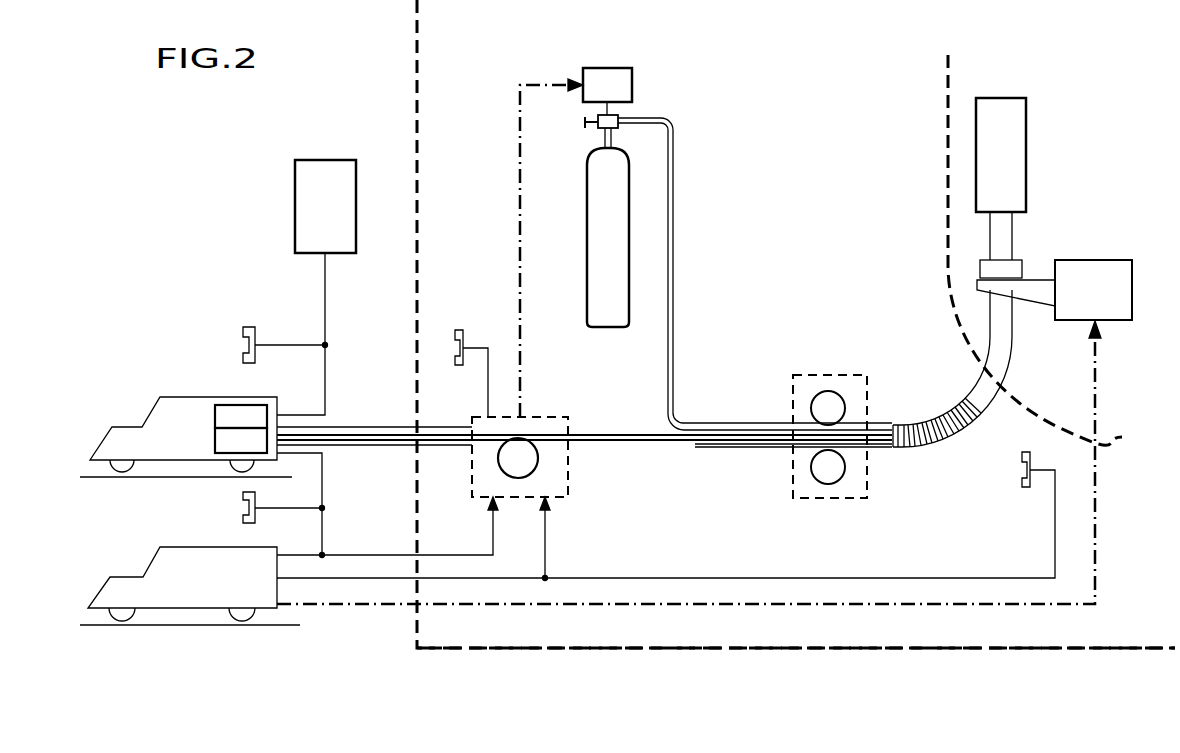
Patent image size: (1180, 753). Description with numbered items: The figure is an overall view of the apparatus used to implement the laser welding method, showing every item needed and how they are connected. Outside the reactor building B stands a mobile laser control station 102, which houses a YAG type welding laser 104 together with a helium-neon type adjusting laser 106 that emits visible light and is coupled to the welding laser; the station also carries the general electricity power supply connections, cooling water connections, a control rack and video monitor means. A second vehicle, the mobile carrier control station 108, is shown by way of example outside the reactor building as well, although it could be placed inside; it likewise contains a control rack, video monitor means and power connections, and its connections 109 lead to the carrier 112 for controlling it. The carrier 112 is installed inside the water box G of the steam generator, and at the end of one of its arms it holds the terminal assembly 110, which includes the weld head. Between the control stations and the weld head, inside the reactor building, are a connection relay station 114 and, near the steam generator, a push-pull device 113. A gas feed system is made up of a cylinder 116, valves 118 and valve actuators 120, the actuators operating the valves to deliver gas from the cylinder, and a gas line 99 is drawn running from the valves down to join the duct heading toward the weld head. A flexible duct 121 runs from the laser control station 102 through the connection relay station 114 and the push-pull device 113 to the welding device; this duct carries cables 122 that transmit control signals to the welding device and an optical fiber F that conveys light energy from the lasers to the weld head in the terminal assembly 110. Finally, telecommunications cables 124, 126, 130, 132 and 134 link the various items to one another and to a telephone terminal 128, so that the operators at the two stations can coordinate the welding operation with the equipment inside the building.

The gas supply tube 99 is at (676, 289).
The mobile laser control station 102 is at (149, 404).
The YAG type welding laser 104 is at (222, 437).
The helium-neon type adjusting laser 106 is at (227, 412).
The mobile carrier control station 108 is at (165, 557).
The connections 109 is at (1015, 609).
The terminal assembly 110 is at (1026, 133).
The carrier 112 is at (1073, 260).
The push-pull device 113 is at (851, 487).
The connection relay station 114 is at (555, 417).
The cylinder 116 is at (603, 203).
The valves 118 is at (620, 114).
The valve actuators 120 is at (632, 75).
The flexible duct 121 is at (396, 426).
The cables 122 is at (606, 433).
The telecommunications cable 124 is at (325, 290).
The telecommunications cable 126 is at (323, 523).
The telephone terminal 128 is at (303, 218).
The telecommunications cable 130 is at (490, 540).
The telecommunications cable 132 is at (948, 578).
The telecommunications cable 134 is at (548, 530).
The reactor building B is at (419, 91).
The optical fiber F is at (626, 448).
The water box G is at (948, 277).